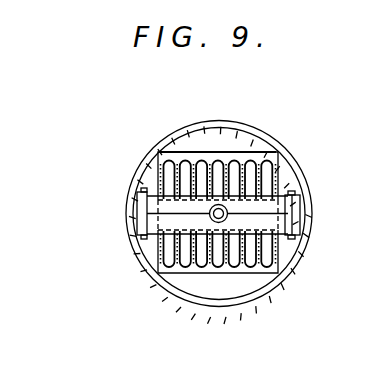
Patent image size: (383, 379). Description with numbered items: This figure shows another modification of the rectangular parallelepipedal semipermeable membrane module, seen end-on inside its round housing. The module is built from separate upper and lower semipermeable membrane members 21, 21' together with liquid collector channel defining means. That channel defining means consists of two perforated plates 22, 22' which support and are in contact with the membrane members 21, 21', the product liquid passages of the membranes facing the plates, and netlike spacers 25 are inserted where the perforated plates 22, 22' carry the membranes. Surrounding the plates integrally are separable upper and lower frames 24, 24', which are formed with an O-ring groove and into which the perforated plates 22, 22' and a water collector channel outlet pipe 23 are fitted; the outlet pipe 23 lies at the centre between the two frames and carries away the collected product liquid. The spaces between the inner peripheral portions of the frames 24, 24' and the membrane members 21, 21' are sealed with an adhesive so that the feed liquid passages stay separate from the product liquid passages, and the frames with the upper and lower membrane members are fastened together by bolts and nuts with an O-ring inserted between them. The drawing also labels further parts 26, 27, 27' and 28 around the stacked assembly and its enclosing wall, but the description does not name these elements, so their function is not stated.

The semipermeable membrane member 21 is at (218, 135).
The heat exchange tubes (lower bank) 21' is at (215, 288).
The perforated plate 22 is at (263, 187).
The perforated plate 22' is at (252, 258).
The water collector channel outlet pipe 23 is at (210, 216).
The upper frame 24 is at (333, 209).
The lower frame 24' is at (334, 234).
The netlike spacer 25 is at (186, 161).
The tube bank casing 26 is at (167, 158).
The cylindrical housing wall 27 is at (231, 205).
The cylindrical housing wall (lower) 27' is at (222, 238).
The top plate 28 is at (258, 153).